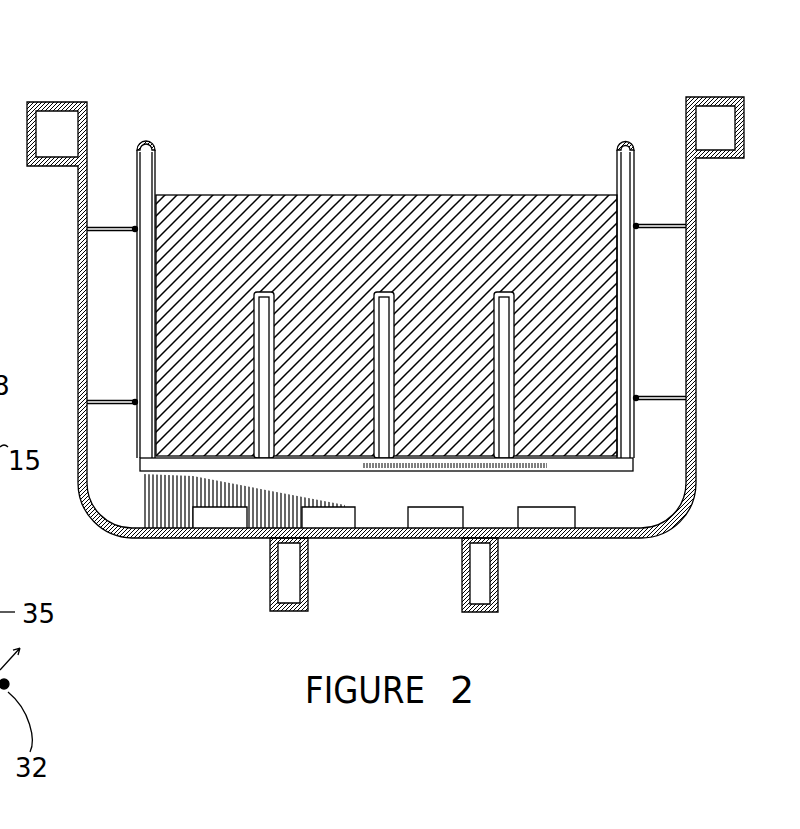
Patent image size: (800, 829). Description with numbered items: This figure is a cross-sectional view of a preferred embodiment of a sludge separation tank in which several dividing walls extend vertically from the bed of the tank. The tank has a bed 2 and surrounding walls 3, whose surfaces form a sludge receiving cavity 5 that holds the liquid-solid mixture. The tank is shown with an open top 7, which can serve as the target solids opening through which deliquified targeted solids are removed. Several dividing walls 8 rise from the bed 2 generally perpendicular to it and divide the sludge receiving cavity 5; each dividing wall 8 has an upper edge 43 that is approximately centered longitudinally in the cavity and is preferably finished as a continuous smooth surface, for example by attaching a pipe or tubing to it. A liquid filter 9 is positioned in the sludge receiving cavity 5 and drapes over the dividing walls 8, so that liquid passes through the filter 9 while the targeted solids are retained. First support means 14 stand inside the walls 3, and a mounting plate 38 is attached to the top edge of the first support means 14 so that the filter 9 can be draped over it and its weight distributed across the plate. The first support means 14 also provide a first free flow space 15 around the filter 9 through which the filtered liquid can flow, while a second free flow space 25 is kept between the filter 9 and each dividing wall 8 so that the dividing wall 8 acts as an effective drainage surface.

The bed 2 is at (557, 539).
The walls 3 is at (694, 342).
The sludge receiving cavity 5 is at (277, 250).
The open top 7 is at (358, 120).
The dividing wall 8 is at (392, 335).
The liquid filter 9 is at (155, 172).
The first support means 14 is at (628, 290).
The first free flow space 15 is at (212, 455).
The second free flow space 25 is at (393, 380).
The mounting plate 38 is at (146, 142).
The upper edge 43 is at (384, 292).